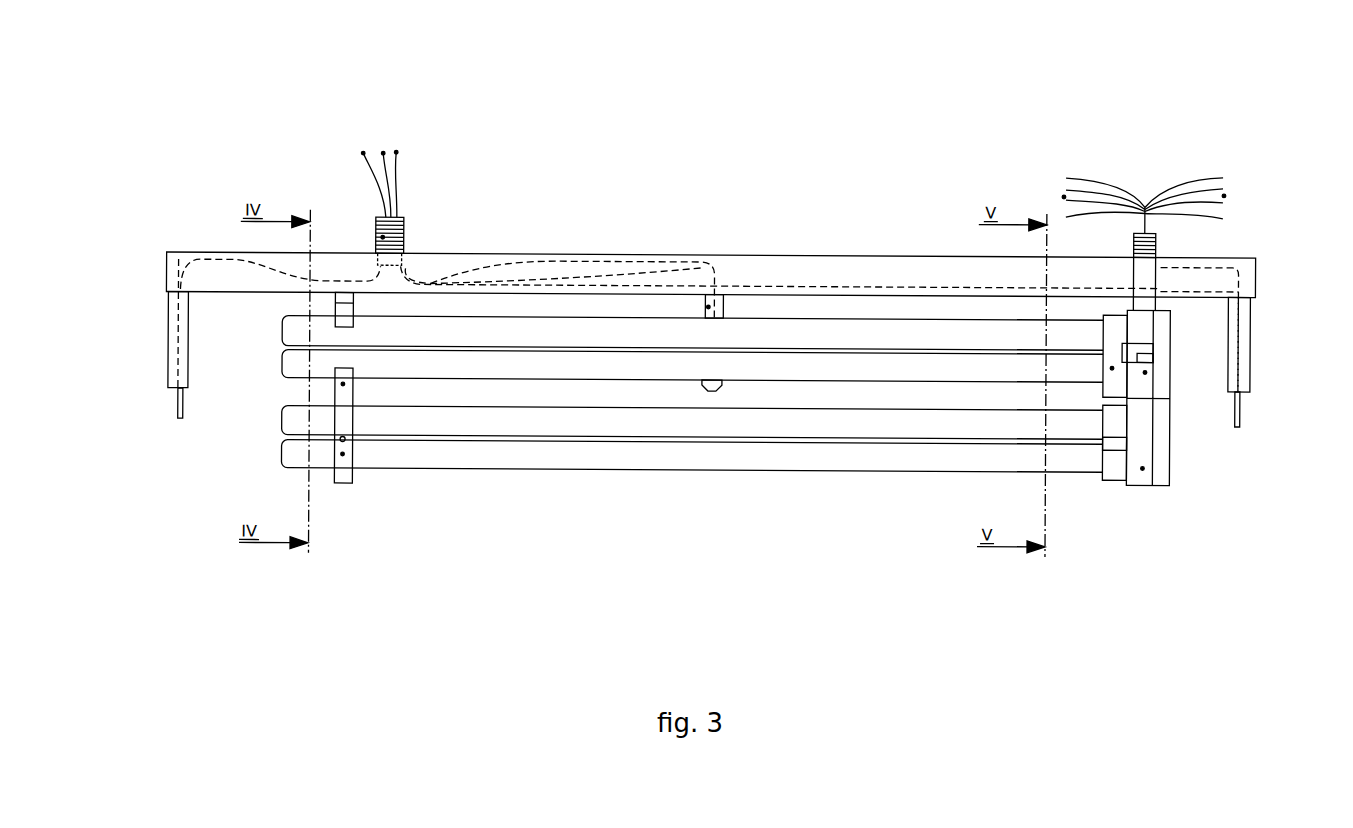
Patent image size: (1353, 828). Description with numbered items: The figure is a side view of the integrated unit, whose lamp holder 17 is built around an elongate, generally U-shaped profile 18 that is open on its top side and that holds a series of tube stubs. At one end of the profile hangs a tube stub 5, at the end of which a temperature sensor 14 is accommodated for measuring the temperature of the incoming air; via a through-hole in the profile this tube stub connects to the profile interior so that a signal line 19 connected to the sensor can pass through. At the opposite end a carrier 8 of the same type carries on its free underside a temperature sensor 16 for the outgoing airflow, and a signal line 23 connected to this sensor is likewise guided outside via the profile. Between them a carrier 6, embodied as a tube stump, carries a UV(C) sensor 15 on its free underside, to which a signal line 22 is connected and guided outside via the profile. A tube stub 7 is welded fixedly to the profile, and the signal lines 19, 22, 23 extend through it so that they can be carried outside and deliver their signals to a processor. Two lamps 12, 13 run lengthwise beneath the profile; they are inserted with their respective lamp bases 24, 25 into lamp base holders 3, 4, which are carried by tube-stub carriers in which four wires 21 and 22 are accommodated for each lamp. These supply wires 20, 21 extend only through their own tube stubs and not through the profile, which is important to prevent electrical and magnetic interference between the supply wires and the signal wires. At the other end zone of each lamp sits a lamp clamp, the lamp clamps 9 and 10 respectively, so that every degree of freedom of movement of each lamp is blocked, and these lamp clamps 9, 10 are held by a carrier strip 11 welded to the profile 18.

The lamp base holder 3 is at (1143, 466).
The lamp base holder 4 is at (1145, 370).
The tube stub 5 is at (1242, 321).
The carrier 6 is at (708, 307).
The tube stub 7 is at (382, 239).
The carrier 8 is at (178, 323).
The lamp clamp 9 is at (343, 483).
The lamp clamp 10 is at (343, 386).
The carrier strip 11 is at (343, 456).
The lamp 12 is at (815, 457).
The lamp 13 is at (872, 367).
The temperature sensor 14 is at (1240, 406).
The UV(C) sensor 15 is at (712, 391).
The temperature sensor 16 is at (178, 413).
The lamp holder 17 is at (638, 210).
The U-shaped profile 18 is at (468, 262).
The signal line 19 is at (395, 154).
The supply wires 20 is at (1223, 193).
The wires 21 is at (1063, 195).
The signal line 22 is at (382, 155).
The signal line 23 is at (362, 155).
The lamp base 24 is at (1110, 458).
The lamp base 25 is at (1112, 366).